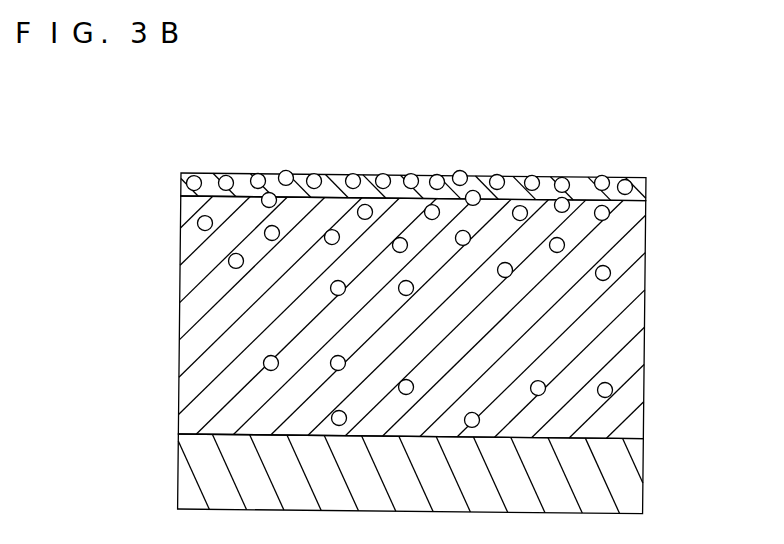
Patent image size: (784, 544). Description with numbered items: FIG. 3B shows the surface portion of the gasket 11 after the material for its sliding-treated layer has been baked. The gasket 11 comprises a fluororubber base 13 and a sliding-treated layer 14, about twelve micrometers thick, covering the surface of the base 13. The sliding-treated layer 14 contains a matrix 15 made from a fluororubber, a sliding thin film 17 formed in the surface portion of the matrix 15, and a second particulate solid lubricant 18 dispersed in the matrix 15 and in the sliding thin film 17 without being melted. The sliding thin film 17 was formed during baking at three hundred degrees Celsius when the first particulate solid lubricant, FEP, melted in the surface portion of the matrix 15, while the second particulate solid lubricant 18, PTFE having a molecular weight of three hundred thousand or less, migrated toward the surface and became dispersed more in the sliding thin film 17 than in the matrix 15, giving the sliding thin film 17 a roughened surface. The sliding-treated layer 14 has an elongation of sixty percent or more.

The gasket 11 is at (205, 160).
The fluororubber base 13 is at (638, 472).
The sliding-treated layer 14 is at (703, 165).
The matrix 15 is at (608, 360).
The sliding thin film 17 is at (643, 190).
The second particulate solid lubricant 18 is at (529, 176).